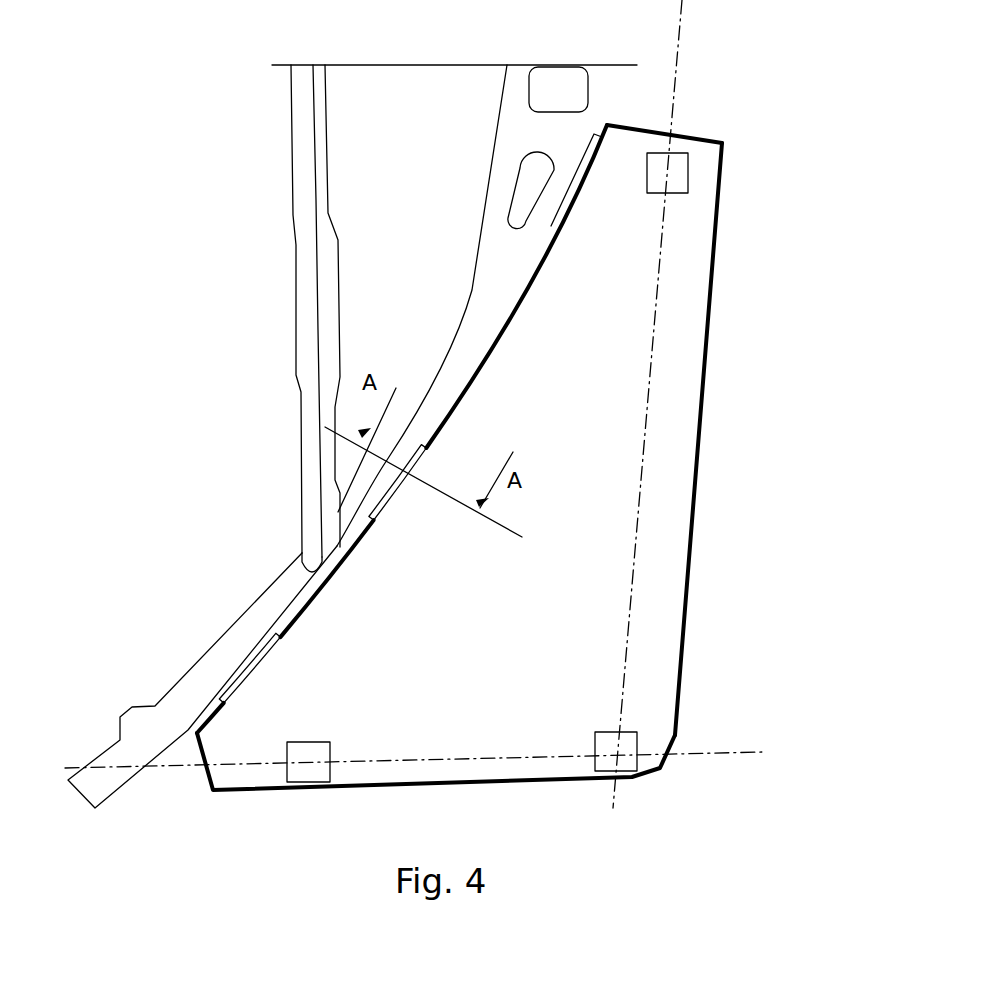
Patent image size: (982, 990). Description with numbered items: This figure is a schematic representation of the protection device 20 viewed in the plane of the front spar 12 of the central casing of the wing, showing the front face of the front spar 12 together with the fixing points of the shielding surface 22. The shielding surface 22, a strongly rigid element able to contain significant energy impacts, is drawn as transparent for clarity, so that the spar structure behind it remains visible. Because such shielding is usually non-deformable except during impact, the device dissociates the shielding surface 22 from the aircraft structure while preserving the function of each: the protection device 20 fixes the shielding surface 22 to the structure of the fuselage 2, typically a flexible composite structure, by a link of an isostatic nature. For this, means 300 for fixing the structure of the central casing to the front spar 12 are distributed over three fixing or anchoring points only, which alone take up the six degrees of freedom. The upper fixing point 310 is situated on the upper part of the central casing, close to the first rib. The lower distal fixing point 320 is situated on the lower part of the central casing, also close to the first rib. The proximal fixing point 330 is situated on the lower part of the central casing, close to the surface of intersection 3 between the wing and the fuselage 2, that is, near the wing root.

The fuselage 2 is at (140, 732).
The surface of intersection 3 is at (468, 361).
The front spar 12 is at (660, 53).
The protection device 20 is at (762, 217).
The shielding surface 22 is at (685, 262).
The means for fixing 300 is at (516, 484).
The upper fixing point 310 is at (672, 176).
The lower distal fixing point 320 is at (628, 762).
The proximal fixing point 330 is at (308, 776).